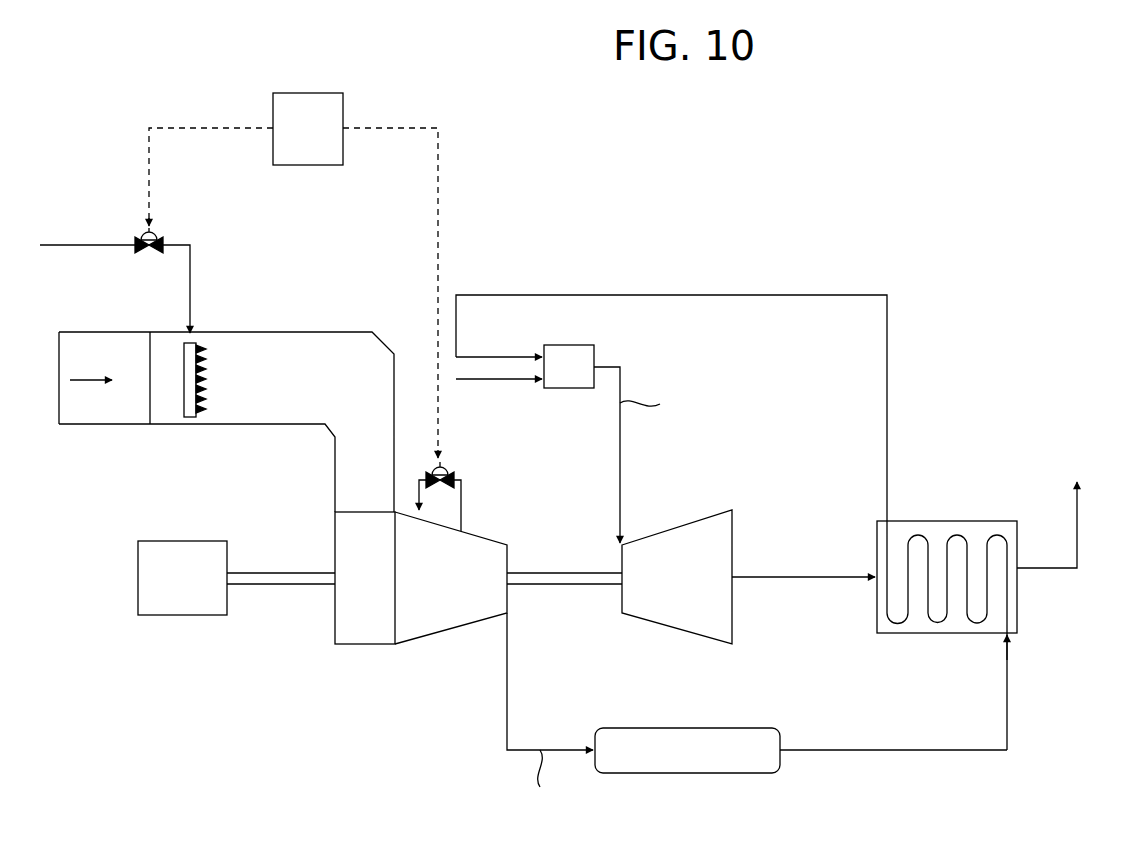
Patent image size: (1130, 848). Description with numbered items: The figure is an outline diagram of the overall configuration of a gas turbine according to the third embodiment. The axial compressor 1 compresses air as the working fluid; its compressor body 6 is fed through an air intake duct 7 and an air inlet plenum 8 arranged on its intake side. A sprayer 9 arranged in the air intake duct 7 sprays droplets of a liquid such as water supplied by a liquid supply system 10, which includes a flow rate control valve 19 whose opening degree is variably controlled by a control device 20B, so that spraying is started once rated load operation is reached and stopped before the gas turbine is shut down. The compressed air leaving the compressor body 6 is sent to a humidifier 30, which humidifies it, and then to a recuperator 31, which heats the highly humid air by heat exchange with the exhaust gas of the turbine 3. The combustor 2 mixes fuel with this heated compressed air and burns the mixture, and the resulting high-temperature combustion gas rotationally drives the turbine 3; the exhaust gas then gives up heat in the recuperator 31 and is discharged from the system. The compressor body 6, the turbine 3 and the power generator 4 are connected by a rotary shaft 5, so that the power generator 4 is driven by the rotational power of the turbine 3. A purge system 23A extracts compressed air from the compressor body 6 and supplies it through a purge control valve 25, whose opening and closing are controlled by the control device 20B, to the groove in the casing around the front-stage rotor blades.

The axial compressor 1 is at (440, 641).
The combustor 2 is at (559, 388).
The turbine 3 is at (666, 592).
The power generator 4 is at (170, 592).
The rotary shaft 5 is at (565, 585).
The compressor body 6 is at (427, 592).
The air intake duct 7 is at (240, 425).
The air inlet plenum 8 is at (335, 524).
The sprayer 9 is at (191, 425).
The liquid supply system 10 is at (190, 285).
The flow rate control valve 19 is at (158, 238).
The control device 20B is at (285, 145).
The purge system 23A is at (461, 505).
The purge control valve 25 is at (455, 472).
The humidifier 30 is at (673, 766).
The recuperator 31 is at (977, 521).